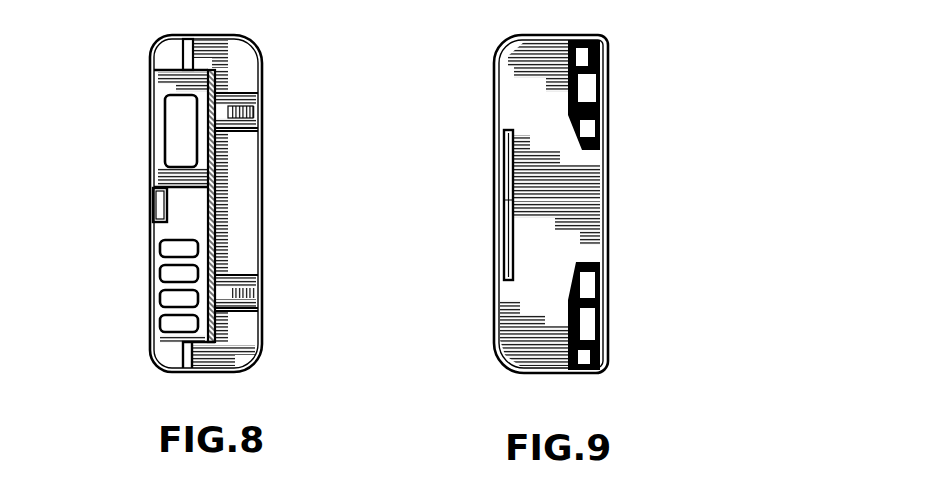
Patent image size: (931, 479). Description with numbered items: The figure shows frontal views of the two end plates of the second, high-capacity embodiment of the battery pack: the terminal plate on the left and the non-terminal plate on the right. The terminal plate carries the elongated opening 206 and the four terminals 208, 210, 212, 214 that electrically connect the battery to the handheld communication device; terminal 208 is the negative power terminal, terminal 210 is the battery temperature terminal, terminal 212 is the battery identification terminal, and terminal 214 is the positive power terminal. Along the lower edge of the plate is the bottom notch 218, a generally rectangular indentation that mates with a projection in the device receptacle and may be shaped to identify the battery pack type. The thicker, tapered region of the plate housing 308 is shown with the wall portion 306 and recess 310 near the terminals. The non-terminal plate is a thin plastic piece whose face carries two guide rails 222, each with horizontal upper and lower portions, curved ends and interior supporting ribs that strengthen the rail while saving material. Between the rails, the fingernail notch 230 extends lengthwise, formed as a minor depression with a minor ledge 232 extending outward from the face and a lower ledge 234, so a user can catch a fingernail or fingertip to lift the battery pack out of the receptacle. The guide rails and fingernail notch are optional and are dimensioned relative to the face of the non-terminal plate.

In FIG. 8, the display window 206 is at (177, 124).
In FIG. 8, the negative power terminal 208 is at (165, 248).
In FIG. 8, the battery temperature terminal 210 is at (165, 273).
In FIG. 8, the battery identification terminal 212 is at (165, 298).
In FIG. 8, the positive power terminal 214 is at (165, 323).
In FIG. 8, the bottom notch 218 is at (152, 207).
In FIG. 9, the guide rail 222 is at (605, 105).
In FIG. 9, the fingernail notch 230 is at (556, 200).
In FIG. 9, the minor ledge 232 is at (501, 159).
In FIG. 9, the slot lower end 234 is at (500, 242).
In FIG. 8, the wall portion 306 is at (262, 112).
In FIG. 8, the housing 308 is at (241, 56).
In FIG. 8, the recess 310 is at (243, 124).